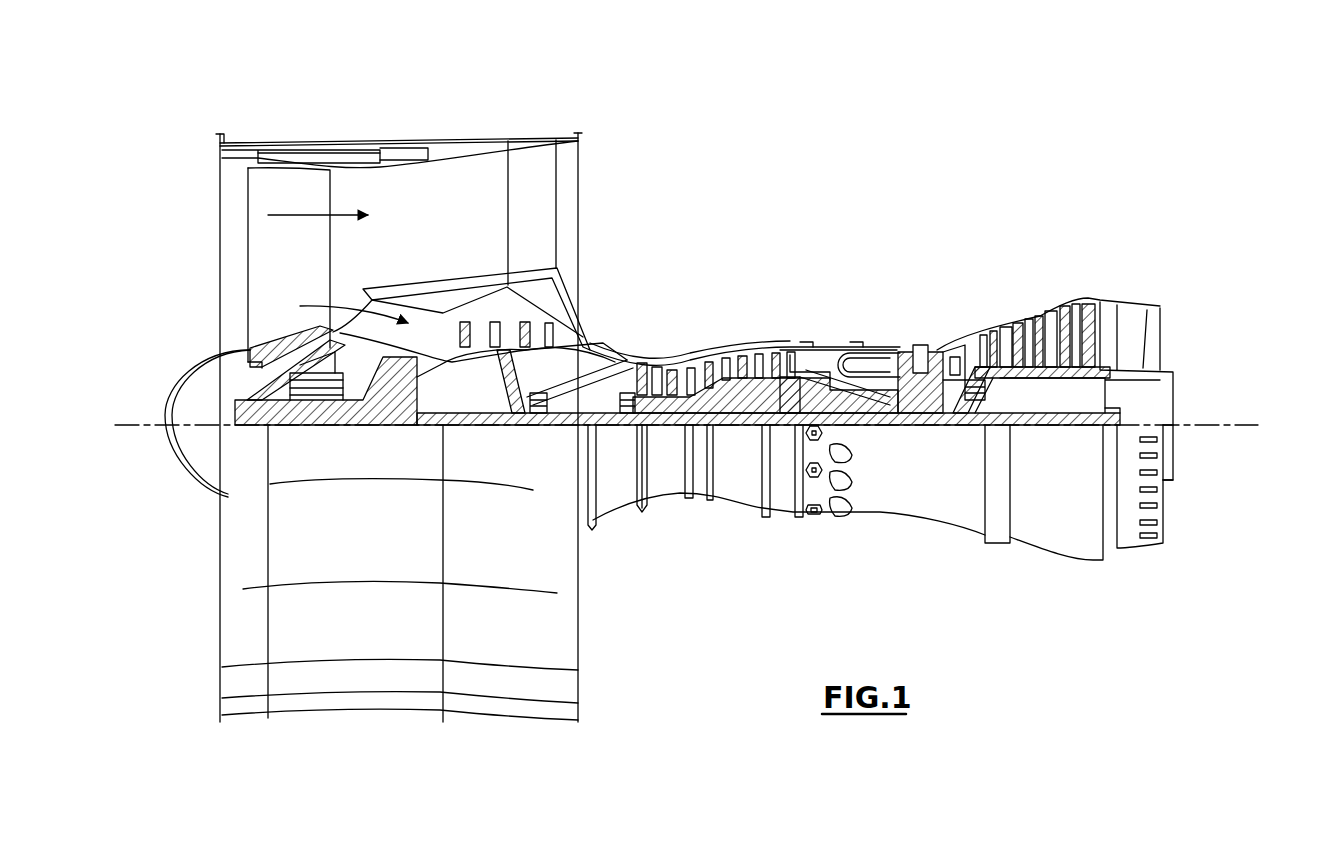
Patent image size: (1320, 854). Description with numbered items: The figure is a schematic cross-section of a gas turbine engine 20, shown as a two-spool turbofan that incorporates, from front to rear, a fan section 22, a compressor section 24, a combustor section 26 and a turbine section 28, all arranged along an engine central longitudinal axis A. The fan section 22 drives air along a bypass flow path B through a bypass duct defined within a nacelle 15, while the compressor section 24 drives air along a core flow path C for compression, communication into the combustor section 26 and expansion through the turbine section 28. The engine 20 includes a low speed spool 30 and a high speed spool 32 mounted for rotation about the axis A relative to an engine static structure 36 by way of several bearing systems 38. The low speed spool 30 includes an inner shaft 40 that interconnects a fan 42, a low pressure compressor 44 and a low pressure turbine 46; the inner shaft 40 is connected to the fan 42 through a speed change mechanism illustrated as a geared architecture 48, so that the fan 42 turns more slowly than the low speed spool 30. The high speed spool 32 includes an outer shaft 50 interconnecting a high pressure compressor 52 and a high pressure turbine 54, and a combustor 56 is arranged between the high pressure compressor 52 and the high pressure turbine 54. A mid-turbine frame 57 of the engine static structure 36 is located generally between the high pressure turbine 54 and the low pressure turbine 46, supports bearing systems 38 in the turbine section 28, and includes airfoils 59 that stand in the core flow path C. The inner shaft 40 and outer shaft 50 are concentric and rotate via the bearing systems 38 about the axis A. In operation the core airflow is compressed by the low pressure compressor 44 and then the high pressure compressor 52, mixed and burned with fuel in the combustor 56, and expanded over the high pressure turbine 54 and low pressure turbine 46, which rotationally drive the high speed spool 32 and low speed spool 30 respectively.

The gas turbine engine 20 is at (864, 191).
The nacelle 15 is at (400, 140).
The fan section 22 is at (330, 130).
The compressor section 24 is at (632, 328).
The combustor section 26 is at (856, 323).
The turbine section 28 is at (1005, 283).
The low speed spool 30 is at (740, 432).
The high speed spool 32 is at (780, 390).
The engine static structure 36 is at (780, 516).
The bearing systems 38 is at (535, 418).
The inner shaft 40 is at (600, 430).
The fan 42 is at (306, 270).
The low pressure compressor 44 is at (503, 330).
The low pressure turbine 46 is at (1050, 322).
The geared architecture 48 is at (409, 405).
The outer shaft 50 is at (872, 405).
The high pressure compressor 52 is at (713, 388).
The high pressure turbine 54 is at (920, 347).
The combustor 56 is at (853, 370).
The mid-turbine frame 57 is at (968, 333).
The airfoils 59 is at (990, 387).
The engine central longitudinal axis A is at (1258, 425).
The bypass flow path B is at (304, 213).
The core flow path C is at (345, 304).